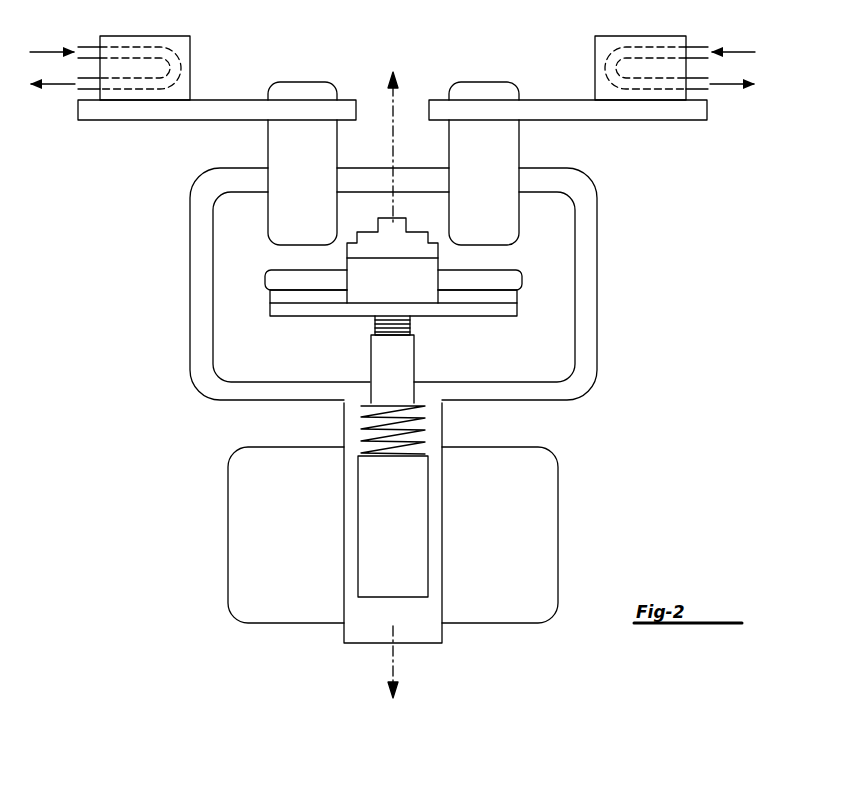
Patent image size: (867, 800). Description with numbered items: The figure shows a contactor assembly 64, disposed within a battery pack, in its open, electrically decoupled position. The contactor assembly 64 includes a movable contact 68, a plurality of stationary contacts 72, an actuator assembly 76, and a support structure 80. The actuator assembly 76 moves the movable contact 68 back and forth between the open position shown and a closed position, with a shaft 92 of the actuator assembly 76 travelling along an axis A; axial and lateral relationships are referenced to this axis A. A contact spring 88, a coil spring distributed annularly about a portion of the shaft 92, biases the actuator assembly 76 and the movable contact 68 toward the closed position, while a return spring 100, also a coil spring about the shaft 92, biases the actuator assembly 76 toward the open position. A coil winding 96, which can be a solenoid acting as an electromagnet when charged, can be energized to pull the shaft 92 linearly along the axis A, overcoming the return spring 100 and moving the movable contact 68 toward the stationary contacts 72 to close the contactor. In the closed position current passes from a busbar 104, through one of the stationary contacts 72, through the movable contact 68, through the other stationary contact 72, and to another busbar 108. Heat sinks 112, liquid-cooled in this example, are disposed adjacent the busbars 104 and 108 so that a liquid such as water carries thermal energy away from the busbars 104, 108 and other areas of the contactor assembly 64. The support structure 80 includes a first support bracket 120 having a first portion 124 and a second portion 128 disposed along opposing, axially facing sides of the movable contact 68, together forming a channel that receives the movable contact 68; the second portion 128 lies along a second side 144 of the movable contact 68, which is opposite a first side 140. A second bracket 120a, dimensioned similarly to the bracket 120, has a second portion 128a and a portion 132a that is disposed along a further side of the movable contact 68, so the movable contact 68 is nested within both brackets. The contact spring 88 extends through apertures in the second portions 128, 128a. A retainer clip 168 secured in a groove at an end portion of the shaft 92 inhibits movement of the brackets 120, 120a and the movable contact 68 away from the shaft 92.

The contactor assembly 64 is at (683, 223).
The movable contact 68 is at (510, 280).
The stationary contacts 72 is at (280, 140).
The actuator assembly 76 is at (400, 357).
The support structure 80 is at (524, 302).
The contact spring 88 is at (373, 325).
The shaft 92 is at (412, 320).
The coil winding 96 is at (540, 514).
The return spring 100 is at (430, 420).
The busbar 104 is at (115, 112).
The busbar 108 is at (670, 112).
The heat sinks 112 is at (190, 52).
The first support bracket 120 is at (287, 300).
The second bracket 120a is at (418, 272).
The first portion 124 is at (412, 245).
The second portion 128 is at (275, 297).
The second portion of the second bracket 128a is at (272, 310).
The portion of the second bracket 132a is at (396, 296).
The first side 140 is at (269, 272).
The second side 144 is at (486, 293).
The retainer clip 168 is at (385, 232).
The axis A is at (396, 668).